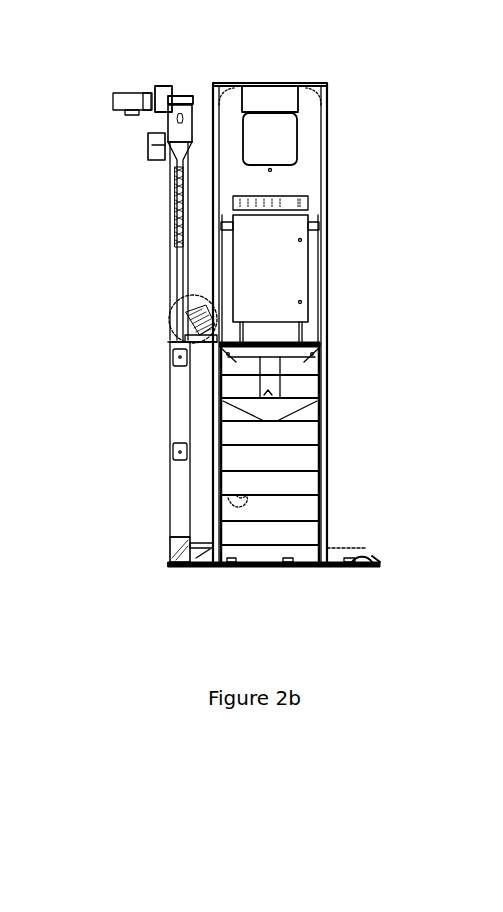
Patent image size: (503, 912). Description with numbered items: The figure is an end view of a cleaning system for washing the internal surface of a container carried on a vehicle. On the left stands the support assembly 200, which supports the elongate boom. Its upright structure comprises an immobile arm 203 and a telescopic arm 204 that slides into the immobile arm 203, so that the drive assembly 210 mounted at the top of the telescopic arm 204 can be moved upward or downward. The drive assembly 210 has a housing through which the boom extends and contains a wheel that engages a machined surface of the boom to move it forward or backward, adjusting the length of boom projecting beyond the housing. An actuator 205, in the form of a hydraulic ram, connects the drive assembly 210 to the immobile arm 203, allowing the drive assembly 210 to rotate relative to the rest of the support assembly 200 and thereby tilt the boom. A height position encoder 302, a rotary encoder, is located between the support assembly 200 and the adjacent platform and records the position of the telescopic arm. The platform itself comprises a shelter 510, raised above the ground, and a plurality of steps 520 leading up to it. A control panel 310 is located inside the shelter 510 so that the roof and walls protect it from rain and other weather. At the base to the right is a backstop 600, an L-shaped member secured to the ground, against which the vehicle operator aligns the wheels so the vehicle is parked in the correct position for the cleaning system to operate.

The support assembly 200 is at (138, 463).
The immobile arm 203 is at (180, 404).
The telescopic arm 204 is at (178, 272).
The actuator 205 is at (173, 229).
The drive assembly 210 is at (167, 134).
The height position encoder 302 is at (185, 333).
The control panel 310 is at (286, 262).
The shelter 510 is at (320, 153).
The steps 520 is at (290, 467).
The backstop 600 is at (358, 555).